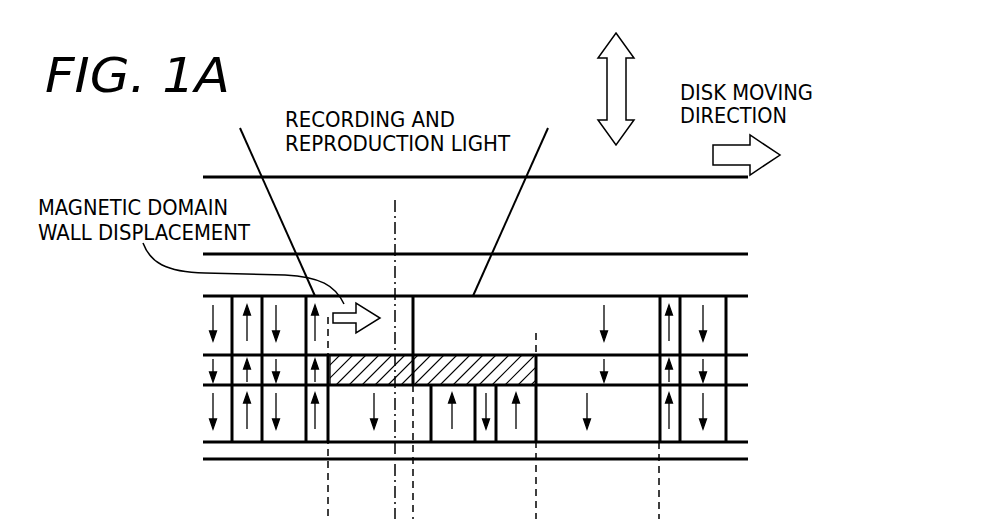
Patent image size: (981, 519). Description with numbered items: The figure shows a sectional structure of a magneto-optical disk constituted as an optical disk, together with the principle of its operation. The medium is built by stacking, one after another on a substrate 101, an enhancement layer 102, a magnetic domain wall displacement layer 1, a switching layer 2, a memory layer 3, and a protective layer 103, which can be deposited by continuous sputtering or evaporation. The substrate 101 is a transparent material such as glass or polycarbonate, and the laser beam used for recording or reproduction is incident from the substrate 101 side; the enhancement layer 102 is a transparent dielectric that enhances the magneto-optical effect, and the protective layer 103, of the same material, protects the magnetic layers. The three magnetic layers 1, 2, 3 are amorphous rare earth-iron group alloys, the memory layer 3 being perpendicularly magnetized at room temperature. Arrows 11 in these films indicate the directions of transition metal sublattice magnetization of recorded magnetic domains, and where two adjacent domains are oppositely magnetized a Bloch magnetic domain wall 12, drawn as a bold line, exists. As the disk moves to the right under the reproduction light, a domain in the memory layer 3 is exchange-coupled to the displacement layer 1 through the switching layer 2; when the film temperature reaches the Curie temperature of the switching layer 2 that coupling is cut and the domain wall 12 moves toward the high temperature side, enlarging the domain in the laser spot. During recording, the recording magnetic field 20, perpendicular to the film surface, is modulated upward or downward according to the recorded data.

The magnetic domain wall displacement layer 1 is at (740, 331).
The switching layer 2 is at (740, 372).
The memory layer 3 is at (740, 420).
The arrows (magnetic domains) 11 is at (208, 412).
The Bloch magnetic domain wall 12 is at (232, 428).
The recording magnetic field 20 is at (618, 45).
The substrate 101 is at (740, 228).
The enhancement layer 102 is at (740, 277).
The protective layer 103 is at (745, 457).